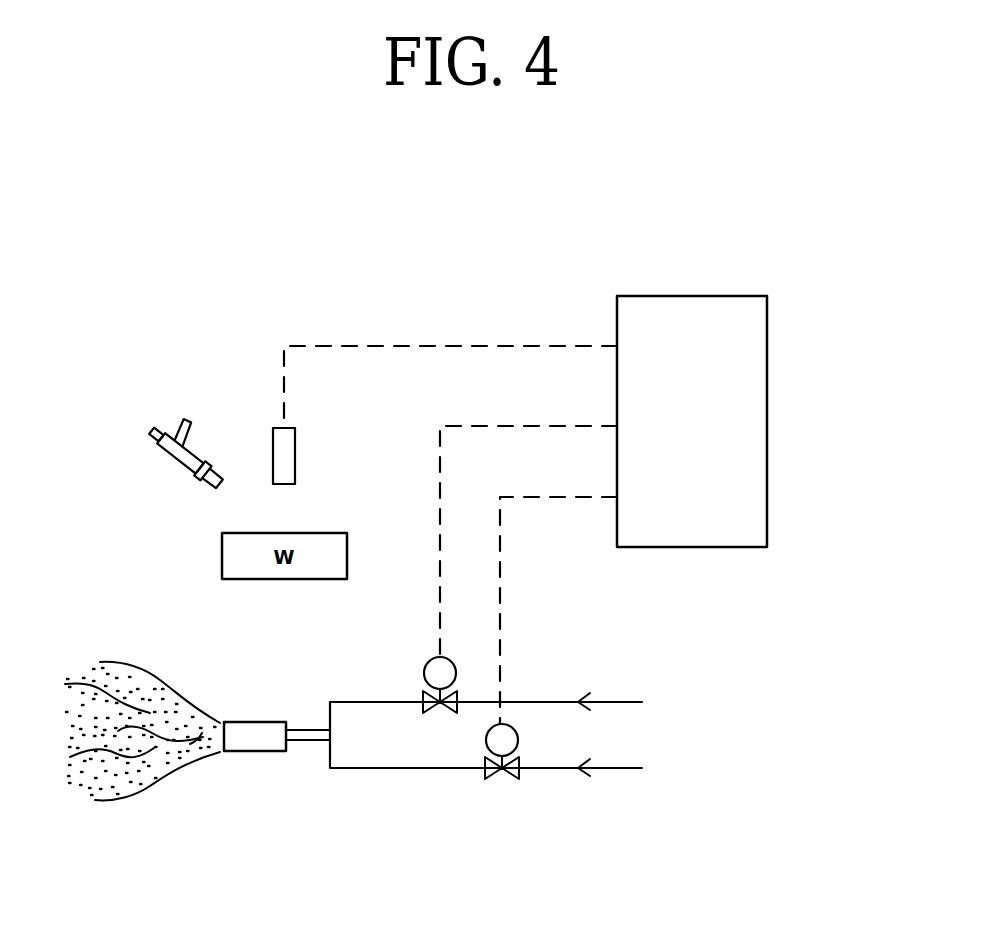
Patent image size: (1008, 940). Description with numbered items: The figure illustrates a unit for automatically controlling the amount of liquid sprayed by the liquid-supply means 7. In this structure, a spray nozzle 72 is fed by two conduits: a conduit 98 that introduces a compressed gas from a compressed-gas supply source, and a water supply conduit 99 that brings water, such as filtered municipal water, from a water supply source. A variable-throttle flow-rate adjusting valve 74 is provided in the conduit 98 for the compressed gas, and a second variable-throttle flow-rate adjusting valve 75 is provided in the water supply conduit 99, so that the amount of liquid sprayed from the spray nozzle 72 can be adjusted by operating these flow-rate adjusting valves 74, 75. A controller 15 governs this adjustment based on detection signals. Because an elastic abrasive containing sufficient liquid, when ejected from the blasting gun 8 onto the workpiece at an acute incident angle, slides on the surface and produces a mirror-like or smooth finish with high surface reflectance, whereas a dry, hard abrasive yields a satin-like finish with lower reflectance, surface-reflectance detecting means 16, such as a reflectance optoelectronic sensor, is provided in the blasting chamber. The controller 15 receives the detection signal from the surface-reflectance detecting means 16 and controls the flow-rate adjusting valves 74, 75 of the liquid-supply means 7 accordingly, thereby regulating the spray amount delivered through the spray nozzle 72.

The liquid-supply means 7 is at (474, 721).
The blasting gun 8 is at (176, 471).
The controller 15 is at (767, 372).
The surface-reflectance detecting means 16 is at (295, 459).
The spray nozzle 72 is at (255, 721).
The variable-throttle flow-rate adjusting valve 74 is at (440, 714).
The variable-throttle flow-rate adjusting valve 75 is at (502, 783).
The conduit 98 is at (375, 700).
The water supply conduit 99 is at (375, 766).